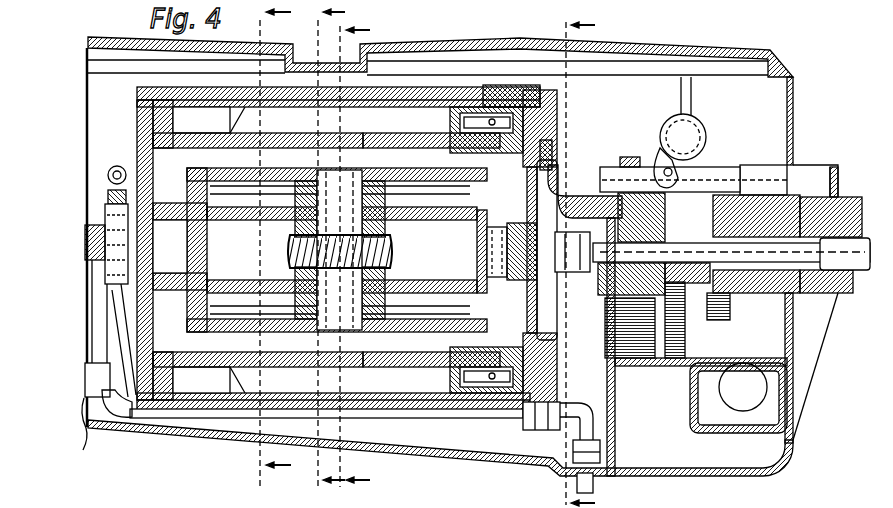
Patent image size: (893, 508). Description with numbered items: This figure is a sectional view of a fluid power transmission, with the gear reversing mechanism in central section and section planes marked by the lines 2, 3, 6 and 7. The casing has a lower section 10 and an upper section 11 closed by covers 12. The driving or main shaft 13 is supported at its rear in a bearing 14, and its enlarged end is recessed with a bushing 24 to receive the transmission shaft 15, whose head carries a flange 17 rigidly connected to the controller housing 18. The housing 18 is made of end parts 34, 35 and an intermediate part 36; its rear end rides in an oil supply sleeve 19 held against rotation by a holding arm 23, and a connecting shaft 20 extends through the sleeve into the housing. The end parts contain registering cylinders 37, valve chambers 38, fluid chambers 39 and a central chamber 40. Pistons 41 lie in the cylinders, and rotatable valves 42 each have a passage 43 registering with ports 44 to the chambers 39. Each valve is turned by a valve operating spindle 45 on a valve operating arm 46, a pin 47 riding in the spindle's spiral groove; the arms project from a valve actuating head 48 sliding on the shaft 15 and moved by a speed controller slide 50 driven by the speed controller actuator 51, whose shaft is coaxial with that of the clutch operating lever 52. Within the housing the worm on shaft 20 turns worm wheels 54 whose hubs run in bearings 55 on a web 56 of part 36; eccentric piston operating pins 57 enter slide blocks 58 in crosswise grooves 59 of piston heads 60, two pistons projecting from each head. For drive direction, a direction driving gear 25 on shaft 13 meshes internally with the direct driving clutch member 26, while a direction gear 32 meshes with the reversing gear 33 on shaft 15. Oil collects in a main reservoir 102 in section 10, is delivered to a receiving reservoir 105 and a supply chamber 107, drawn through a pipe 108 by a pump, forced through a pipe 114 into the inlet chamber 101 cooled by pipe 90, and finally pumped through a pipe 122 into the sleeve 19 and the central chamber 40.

The section line 2 is at (577, 256).
The section line 3 is at (354, 258).
The section line 6 is at (326, 254).
The section line 7 is at (269, 253).
The lower section of transmission casing 10 is at (793, 440).
The upper section of transmission casing 11 is at (795, 112).
The covers 12 is at (740, 50).
The driving or main shaft 13 is at (866, 262).
The bearing 14 is at (817, 202).
The transmission shaft 15 is at (598, 273).
The flange 17 is at (480, 229).
The controller housing 18 is at (542, 123).
The oil supply sleeve 19 is at (137, 236).
The connecting shaft 20 is at (95, 241).
The holding arm 23 is at (94, 427).
The bushing 24 is at (753, 297).
The direction driving gear 25 is at (720, 296).
The direct driving clutch member 26 is at (714, 175).
The direction gear 32 is at (648, 356).
The reversing gear 33 is at (648, 298).
The end part of housing 34 is at (223, 88).
The end part of housing 35 is at (433, 97).
The intermediate part of housing 36 is at (348, 413).
The cylinders 37 is at (340, 136).
The valve chambers 38 is at (403, 100).
The fluid chambers 39 is at (548, 160).
The central chamber 40 is at (213, 250).
The piston 41 is at (405, 208).
The valves 42 is at (437, 107).
The passage 43 is at (303, 127).
The ports 44 is at (400, 147).
The valve operating spindle 45 is at (537, 122).
The valve operating arm 46 is at (545, 355).
The pin 47 is at (513, 142).
The valve actuating head 48 is at (513, 251).
The speed controller slide 50 is at (600, 172).
The speed controller actuator 51 is at (663, 157).
The clutch operating lever 52 is at (683, 118).
The worm wheels 54 is at (392, 248).
The bearings 55 is at (294, 228).
The web 56 is at (340, 147).
The piston operating pins 57 is at (298, 280).
The slide blocks 58 is at (380, 281).
The crosswise grooves 59 is at (310, 349).
The piston heads 60 is at (350, 349).
The pipe 90 is at (737, 401).
The inlet chamber 101 is at (757, 418).
The main reservoir 102 is at (473, 446).
The receiving reservoir 105 is at (681, 352).
The supply chamber 107 is at (670, 465).
The pipe 108 is at (503, 417).
The pipe 114 is at (747, 170).
The pipe 122 is at (117, 166).